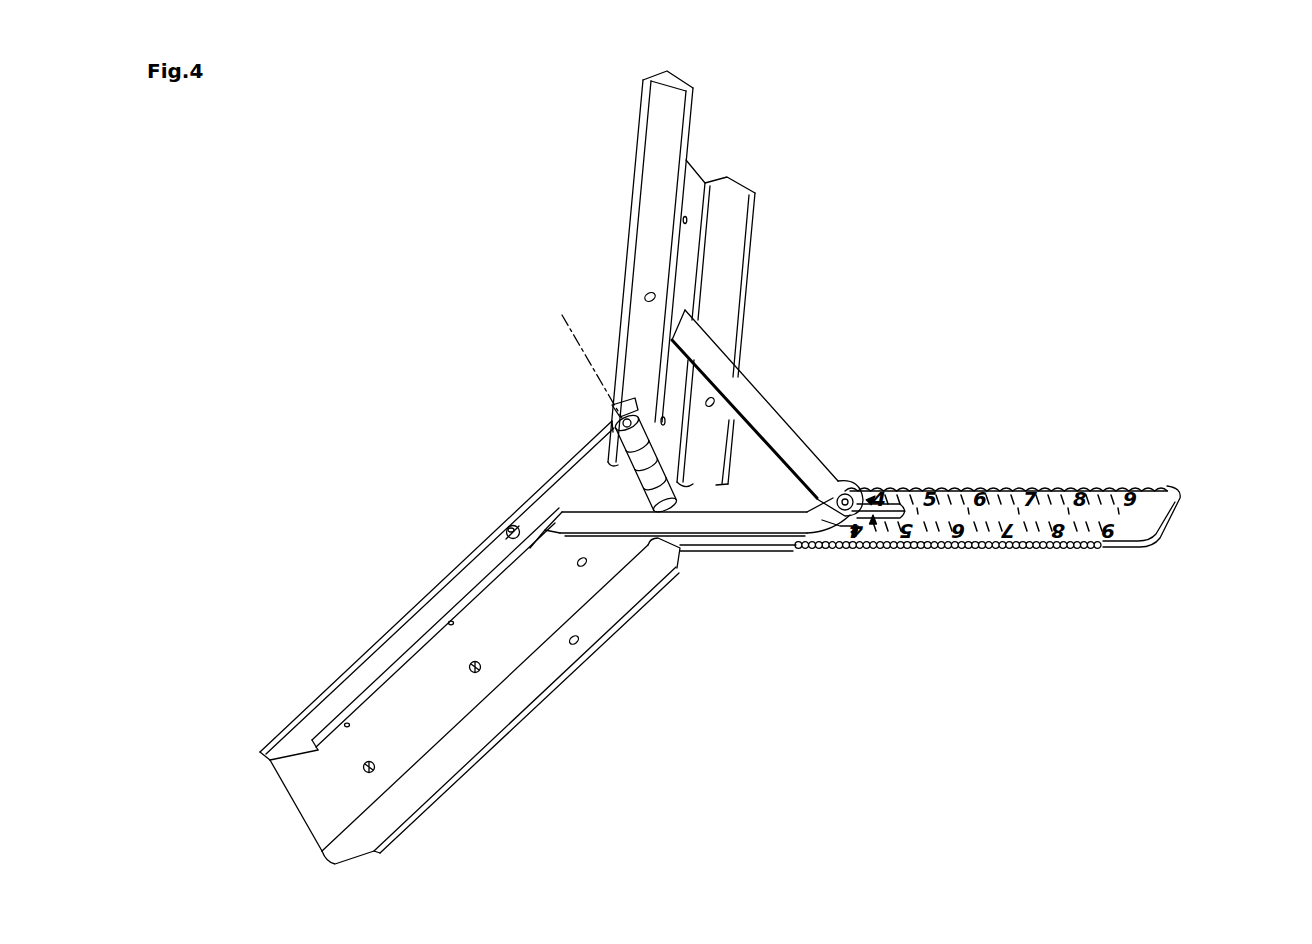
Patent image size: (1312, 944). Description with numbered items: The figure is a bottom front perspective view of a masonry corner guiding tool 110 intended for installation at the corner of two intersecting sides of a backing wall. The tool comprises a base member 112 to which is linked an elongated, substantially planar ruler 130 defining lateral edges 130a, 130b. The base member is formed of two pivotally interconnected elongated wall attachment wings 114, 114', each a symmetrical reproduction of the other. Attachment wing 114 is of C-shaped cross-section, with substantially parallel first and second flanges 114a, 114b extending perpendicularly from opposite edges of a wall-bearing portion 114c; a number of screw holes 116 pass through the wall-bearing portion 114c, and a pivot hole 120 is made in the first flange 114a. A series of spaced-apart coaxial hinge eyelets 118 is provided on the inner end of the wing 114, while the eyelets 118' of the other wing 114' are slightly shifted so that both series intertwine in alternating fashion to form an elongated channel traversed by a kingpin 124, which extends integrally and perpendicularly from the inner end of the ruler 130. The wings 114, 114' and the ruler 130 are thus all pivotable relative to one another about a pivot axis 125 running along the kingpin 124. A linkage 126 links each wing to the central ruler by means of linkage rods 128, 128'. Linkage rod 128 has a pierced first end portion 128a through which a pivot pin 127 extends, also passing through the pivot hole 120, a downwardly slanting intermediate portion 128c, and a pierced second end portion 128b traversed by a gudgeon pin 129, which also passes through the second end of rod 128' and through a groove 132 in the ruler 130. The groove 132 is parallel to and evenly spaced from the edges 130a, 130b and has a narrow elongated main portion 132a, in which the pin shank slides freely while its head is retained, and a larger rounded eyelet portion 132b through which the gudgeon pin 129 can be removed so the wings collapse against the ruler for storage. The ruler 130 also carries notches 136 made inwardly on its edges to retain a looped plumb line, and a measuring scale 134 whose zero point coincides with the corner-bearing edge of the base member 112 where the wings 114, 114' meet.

The masonry corner guiding tool 110 is at (954, 209).
The base member 112 is at (540, 475).
The attachment wing 114 is at (466, 645).
The first flange 114a is at (314, 724).
The second flange 114b is at (400, 812).
The wall-bearing portion 114c is at (310, 802).
The attachment wing 114' is at (637, 279).
The screw holes 116 is at (374, 771).
The hinge eyelets 118 is at (583, 461).
The hinge eyelets 118' is at (593, 330).
The pivot hole 120 is at (515, 540).
The kingpin 124 is at (613, 417).
The pivot axis 125 is at (562, 322).
The linkage 126 is at (794, 436).
The pivot pin 127 is at (504, 523).
The linkage rod 128 is at (683, 587).
The first end portion 128a is at (556, 528).
The second end portion 128b is at (817, 541).
The intermediate portion 128c is at (593, 523).
The linkage rod 128' is at (778, 390).
The gudgeon pin 129 is at (872, 504).
The ruler 130 is at (1168, 506).
The lateral edge 130a is at (1057, 551).
The lateral edge 130b is at (1068, 483).
The groove 132 is at (848, 515).
The main portion 132a is at (873, 493).
The eyelet portion 132b is at (910, 500).
The measuring scale 134 is at (940, 497).
The notches 136 is at (965, 488).